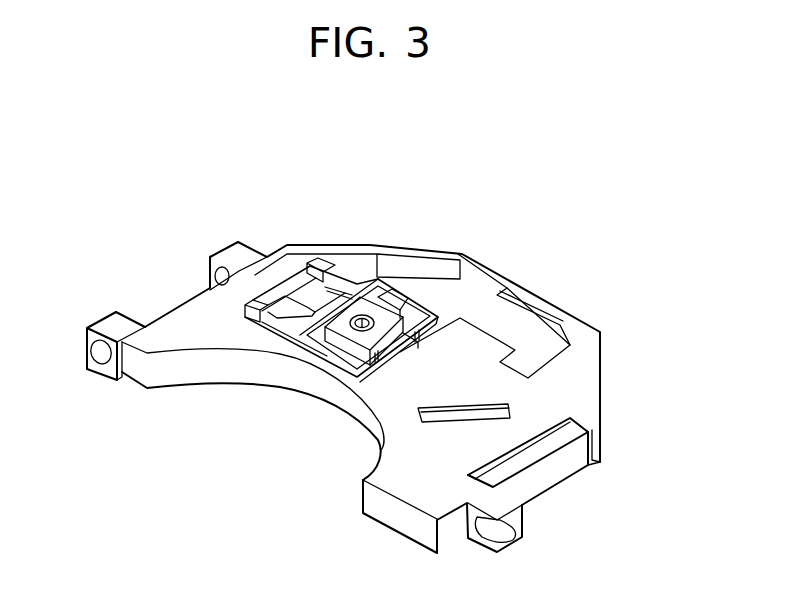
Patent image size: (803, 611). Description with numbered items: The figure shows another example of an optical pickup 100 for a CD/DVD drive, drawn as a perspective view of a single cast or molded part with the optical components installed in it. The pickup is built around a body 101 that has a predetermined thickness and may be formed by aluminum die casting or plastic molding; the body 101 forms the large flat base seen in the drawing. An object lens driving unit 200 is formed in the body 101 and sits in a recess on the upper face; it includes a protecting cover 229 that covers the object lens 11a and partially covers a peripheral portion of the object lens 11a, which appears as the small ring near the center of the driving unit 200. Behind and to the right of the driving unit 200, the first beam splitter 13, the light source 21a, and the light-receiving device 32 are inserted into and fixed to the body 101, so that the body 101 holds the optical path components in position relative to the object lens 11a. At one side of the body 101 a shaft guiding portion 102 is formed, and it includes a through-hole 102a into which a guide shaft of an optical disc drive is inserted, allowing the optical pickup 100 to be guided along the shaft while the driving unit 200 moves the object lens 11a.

The optical pickup 100 is at (607, 249).
The body 101 is at (183, 328).
The shaft guiding portion 102 is at (233, 255).
The through-hole 102a is at (101, 355).
The object lens driving unit 200 is at (290, 283).
The object lens 11a is at (362, 313).
The protecting cover 229 is at (400, 294).
The first beam splitter 13 is at (467, 412).
The light source 21a is at (530, 325).
The light-receiving device 32 is at (550, 475).